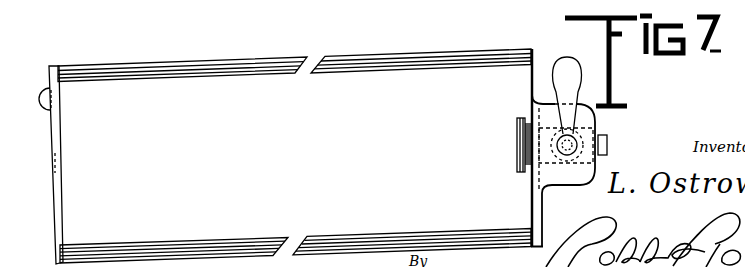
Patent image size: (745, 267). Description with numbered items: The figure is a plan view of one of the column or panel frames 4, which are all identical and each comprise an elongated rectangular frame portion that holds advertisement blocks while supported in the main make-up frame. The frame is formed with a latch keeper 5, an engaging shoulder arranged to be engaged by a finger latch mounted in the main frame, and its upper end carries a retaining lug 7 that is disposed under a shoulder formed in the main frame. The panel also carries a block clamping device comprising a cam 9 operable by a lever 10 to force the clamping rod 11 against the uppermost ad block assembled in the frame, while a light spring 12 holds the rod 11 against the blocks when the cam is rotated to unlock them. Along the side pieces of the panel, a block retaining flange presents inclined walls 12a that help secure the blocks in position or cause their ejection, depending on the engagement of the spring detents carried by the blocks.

The panel frame 4 is at (255, 58).
The latch keeper 5 is at (62, 160).
The retaining lug 7 is at (608, 145).
The cam 9 is at (598, 132).
The lever 10 is at (567, 72).
The clamping rod 11 is at (515, 137).
The light spring 12 is at (520, 116).
The inclined wall 12a is at (162, 76).